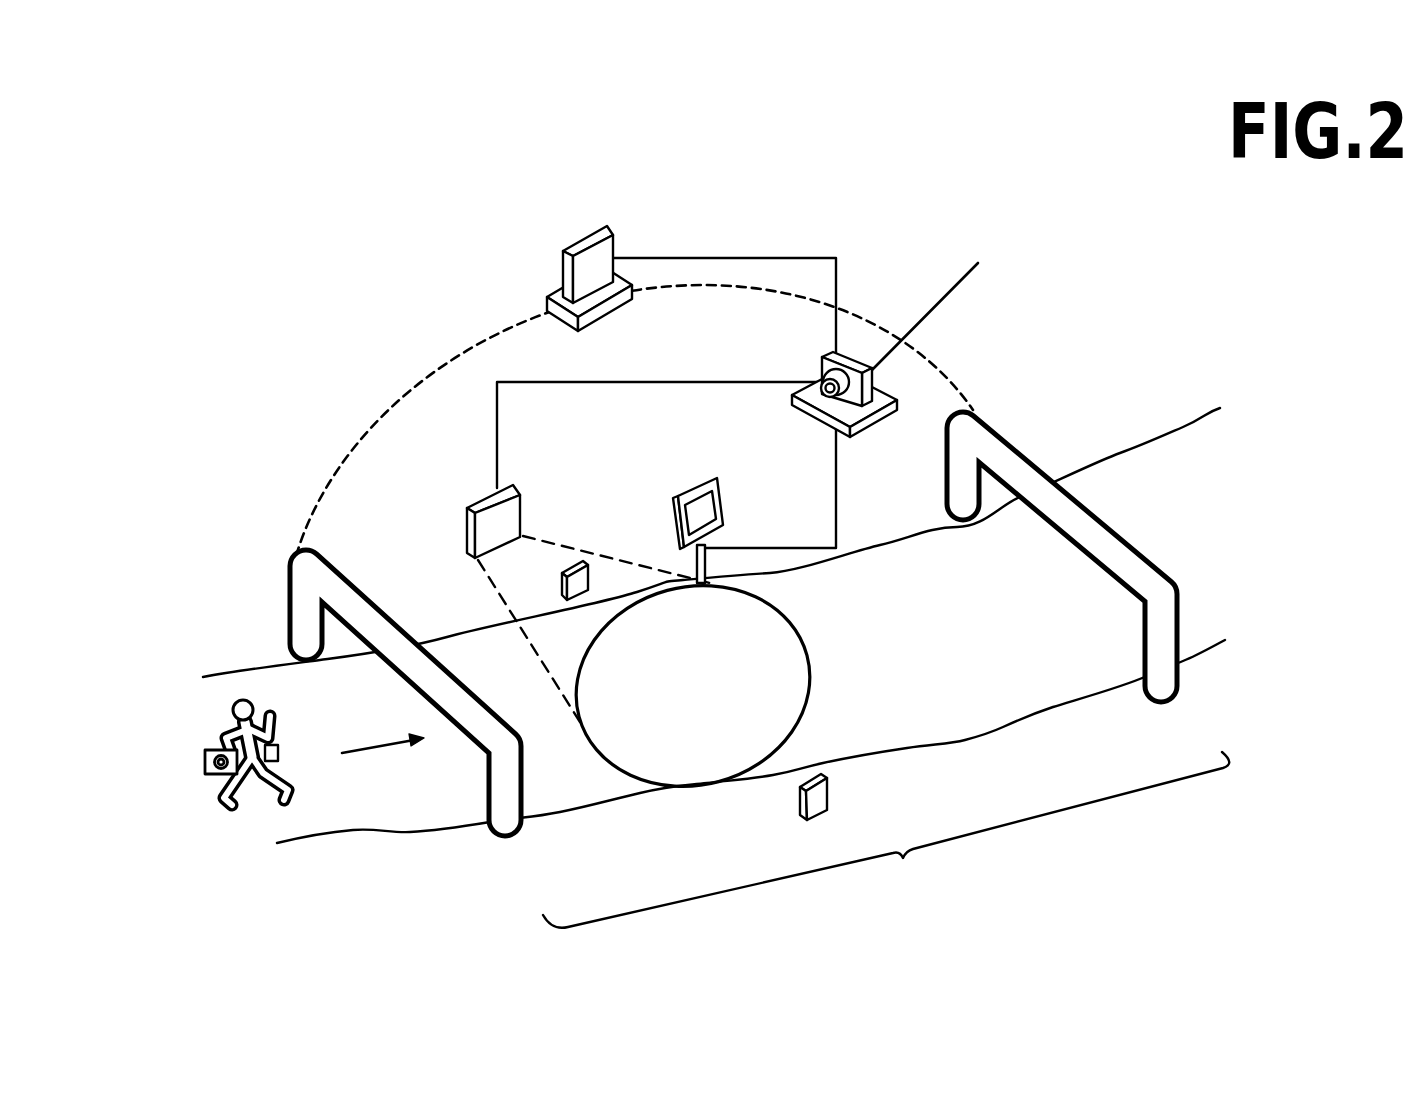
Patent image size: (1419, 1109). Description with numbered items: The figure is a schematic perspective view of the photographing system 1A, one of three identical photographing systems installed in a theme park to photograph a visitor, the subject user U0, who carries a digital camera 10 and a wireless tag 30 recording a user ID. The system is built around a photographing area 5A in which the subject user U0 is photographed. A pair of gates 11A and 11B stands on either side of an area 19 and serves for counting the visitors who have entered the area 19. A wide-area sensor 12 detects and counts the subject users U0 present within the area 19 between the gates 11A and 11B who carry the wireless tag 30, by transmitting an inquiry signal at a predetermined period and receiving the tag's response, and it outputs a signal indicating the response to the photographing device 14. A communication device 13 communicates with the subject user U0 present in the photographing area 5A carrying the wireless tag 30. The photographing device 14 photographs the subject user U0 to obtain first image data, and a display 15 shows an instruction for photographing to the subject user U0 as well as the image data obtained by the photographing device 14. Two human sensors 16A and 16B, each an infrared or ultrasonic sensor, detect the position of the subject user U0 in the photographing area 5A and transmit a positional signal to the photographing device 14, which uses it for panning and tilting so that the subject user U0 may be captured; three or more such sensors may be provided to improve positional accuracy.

The photographing system 1A is at (760, 186).
The photographing area 5A is at (706, 770).
The digital camera 10 is at (205, 767).
The gate 11A is at (323, 565).
The gate 11B is at (1022, 462).
The wide-area sensor 12 is at (585, 240).
The communication device 13 is at (505, 487).
The photographing device 14 is at (863, 433).
The display 15 is at (725, 503).
The human sensor 16A is at (566, 565).
The human sensor 16B is at (812, 778).
The area 19 is at (716, 668).
The wireless tag 30 is at (278, 749).
The subject user U0 is at (246, 698).